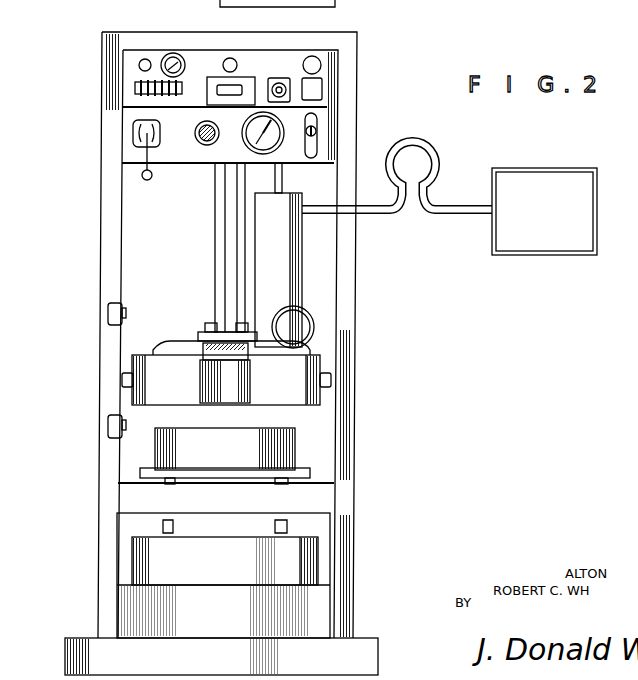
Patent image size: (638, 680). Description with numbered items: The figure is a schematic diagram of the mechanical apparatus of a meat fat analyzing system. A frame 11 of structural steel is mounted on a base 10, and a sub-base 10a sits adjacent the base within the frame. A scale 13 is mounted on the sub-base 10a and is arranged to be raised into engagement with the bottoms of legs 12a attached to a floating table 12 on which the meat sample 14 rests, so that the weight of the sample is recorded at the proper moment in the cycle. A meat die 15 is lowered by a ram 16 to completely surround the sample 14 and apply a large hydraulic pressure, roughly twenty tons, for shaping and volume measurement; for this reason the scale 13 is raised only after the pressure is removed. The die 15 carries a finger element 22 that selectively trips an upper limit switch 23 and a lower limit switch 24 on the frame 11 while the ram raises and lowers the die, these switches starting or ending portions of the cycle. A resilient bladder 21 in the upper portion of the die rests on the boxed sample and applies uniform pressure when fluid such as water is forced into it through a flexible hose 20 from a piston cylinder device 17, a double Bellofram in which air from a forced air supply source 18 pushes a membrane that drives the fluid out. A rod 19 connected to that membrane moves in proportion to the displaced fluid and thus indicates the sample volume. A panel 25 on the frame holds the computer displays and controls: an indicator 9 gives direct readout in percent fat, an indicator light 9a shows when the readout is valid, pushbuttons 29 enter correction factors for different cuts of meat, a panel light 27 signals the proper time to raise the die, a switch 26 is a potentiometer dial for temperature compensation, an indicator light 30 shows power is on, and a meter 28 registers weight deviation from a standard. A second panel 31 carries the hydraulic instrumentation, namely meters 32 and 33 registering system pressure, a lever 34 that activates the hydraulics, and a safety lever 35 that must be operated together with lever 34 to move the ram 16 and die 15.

The indicator 9 is at (246, 78).
The indicator light 9a is at (230, 57).
The base 10 is at (88, 655).
The sub-base 10a is at (135, 604).
The frame 11 is at (352, 455).
The table 12 is at (153, 469).
The legs 12a is at (275, 526).
The scale 13 is at (138, 547).
The meat sample 14 is at (292, 443).
The meat die 15 is at (322, 378).
The ram 16 is at (223, 238).
The piston cylinder device 17 is at (293, 250).
The forced air supply source 18 is at (548, 170).
The rod 19 is at (283, 180).
The flexible hose 20 is at (313, 313).
The bladder 21 is at (234, 404).
The finger element 22 is at (125, 378).
The upper limit switch 23 is at (108, 313).
The lower limit switch 24 is at (108, 425).
The panel 25 is at (291, 78).
The switch 26 is at (313, 56).
The panel light 27 is at (322, 91).
The meter 28 is at (174, 53).
The pushbuttons 29 is at (134, 88).
The indicator light 30 is at (138, 65).
The panel 31 is at (317, 122).
The meter 32 is at (205, 148).
The meter 33 is at (264, 155).
The lever 34 is at (316, 133).
The safety lever 35 is at (133, 133).